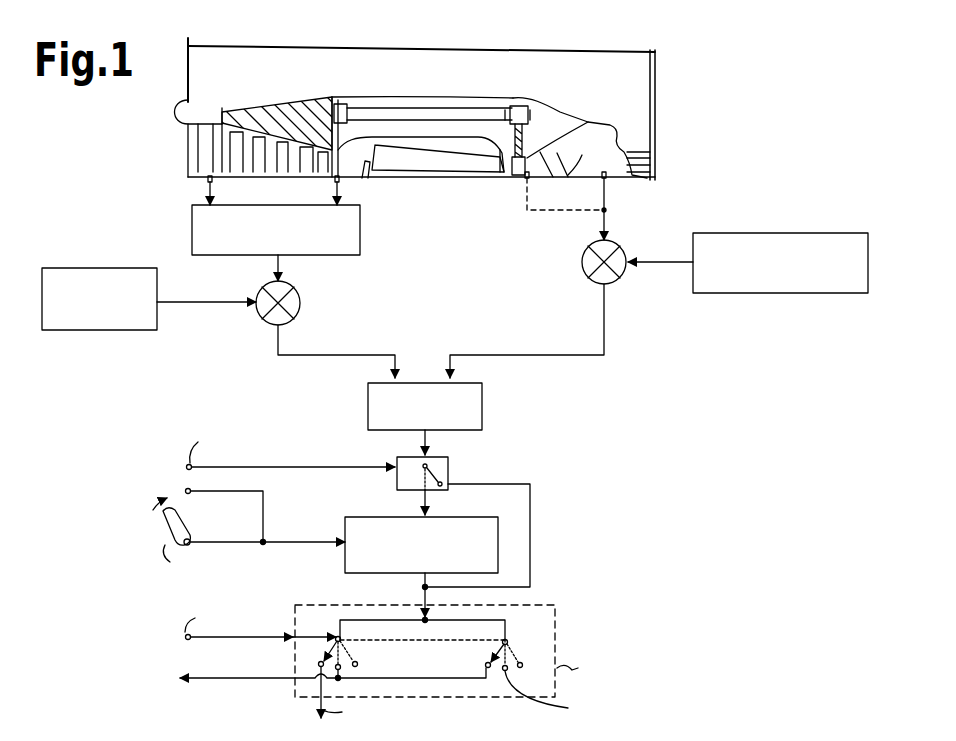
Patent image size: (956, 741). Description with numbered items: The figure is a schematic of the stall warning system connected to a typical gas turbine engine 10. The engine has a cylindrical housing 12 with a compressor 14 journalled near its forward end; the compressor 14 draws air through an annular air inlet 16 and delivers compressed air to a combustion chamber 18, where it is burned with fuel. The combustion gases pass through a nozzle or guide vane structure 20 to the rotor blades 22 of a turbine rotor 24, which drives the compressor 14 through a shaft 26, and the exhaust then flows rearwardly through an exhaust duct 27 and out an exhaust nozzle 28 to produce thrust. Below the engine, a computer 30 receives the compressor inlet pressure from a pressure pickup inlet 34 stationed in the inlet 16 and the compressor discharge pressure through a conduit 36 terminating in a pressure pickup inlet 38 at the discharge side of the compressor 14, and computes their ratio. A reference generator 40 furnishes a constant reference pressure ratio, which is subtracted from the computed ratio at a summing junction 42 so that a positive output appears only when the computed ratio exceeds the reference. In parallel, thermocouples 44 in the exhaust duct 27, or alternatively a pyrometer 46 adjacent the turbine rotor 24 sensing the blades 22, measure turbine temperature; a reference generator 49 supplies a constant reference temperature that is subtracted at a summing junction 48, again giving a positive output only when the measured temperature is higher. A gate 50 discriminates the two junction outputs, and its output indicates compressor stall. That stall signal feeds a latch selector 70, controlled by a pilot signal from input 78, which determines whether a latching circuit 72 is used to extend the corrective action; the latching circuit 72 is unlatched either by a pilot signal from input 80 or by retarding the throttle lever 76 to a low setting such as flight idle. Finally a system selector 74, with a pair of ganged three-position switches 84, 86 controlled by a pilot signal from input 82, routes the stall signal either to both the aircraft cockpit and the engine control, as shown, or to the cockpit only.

The gas turbine engine 10 is at (399, 31).
The cylindrical housing 12 is at (357, 50).
The compressor 14 is at (262, 122).
The annular air inlet 16 is at (187, 148).
The combustion chamber 18 is at (410, 166).
The nozzle or guide vane structure 20 is at (500, 161).
The rotor blades 22 is at (580, 138).
The turbine rotor 24 is at (530, 112).
The shaft 26 is at (437, 110).
The exhaust duct 27 is at (583, 156).
The exhaust nozzle 28 is at (656, 126).
The computer 30 is at (345, 257).
The pressure pickup inlet 34 is at (208, 182).
The conduit 36 is at (340, 180).
The pressure pickup inlet 38 is at (344, 178).
The reference generator 40 is at (95, 332).
The summing junction 42 is at (297, 305).
The thermocouples 44 is at (612, 180).
The pyrometer 46 is at (522, 180).
The summing junction 48 is at (583, 270).
The reference generator 49 is at (751, 297).
The gate 50 is at (484, 413).
The latch selector 70 is at (450, 462).
The latching circuit 72 is at (452, 517).
The system selector 74 is at (557, 632).
The throttle lever 76 is at (165, 525).
The input 78 is at (185, 467).
The input 80 is at (185, 491).
The input 82 is at (185, 637).
The three-position switch 84 is at (337, 637).
The three-position switch 86 is at (506, 640).